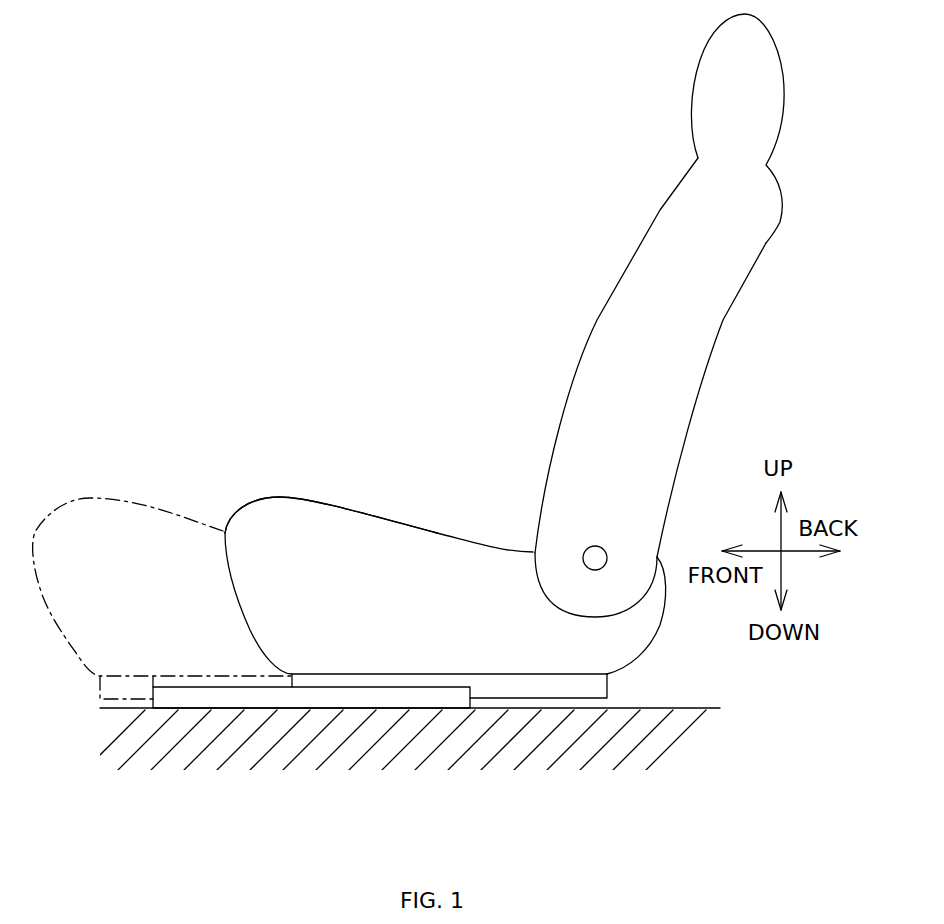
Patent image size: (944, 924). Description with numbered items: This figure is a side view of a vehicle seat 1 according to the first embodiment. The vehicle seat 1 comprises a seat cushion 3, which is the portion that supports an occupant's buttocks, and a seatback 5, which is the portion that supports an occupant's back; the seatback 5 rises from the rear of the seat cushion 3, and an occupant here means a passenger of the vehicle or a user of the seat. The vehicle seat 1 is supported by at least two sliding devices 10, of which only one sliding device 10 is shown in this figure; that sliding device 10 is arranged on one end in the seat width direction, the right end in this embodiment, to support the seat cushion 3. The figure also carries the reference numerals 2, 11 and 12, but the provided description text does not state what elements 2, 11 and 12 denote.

The vehicle seat 1 is at (396, 252).
The seat cushion 2 is at (360, 507).
The seat cushion 3 is at (437, 533).
The seatback 5 is at (610, 295).
The sliding device 10 is at (510, 700).
The slide rail 11 is at (388, 697).
The bracket 12 is at (595, 687).